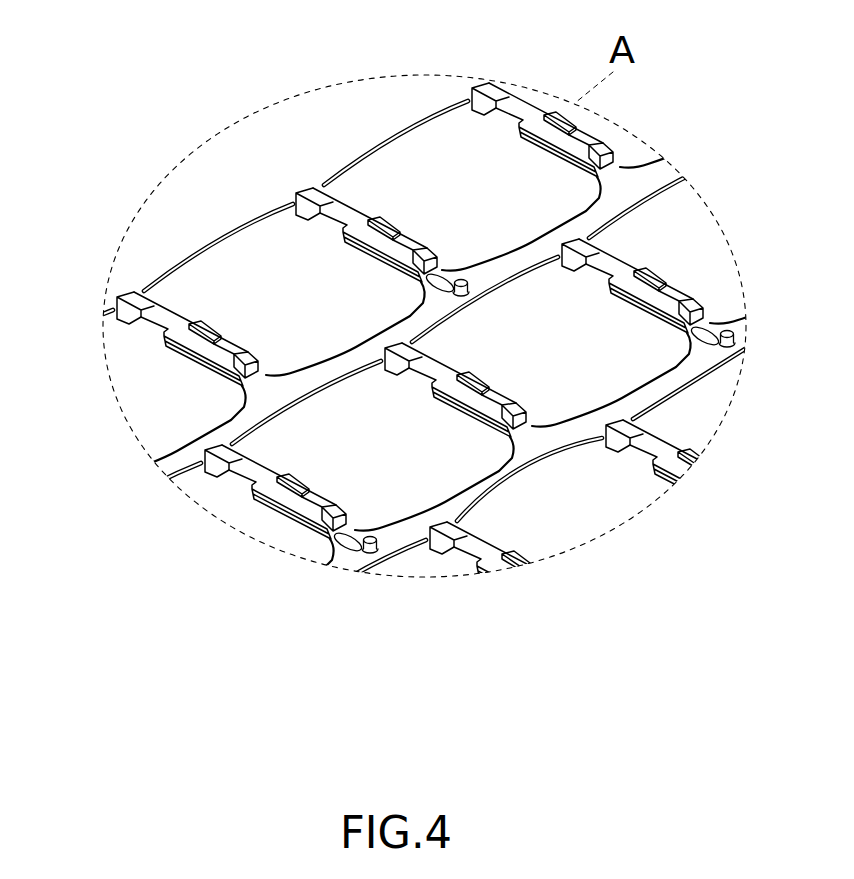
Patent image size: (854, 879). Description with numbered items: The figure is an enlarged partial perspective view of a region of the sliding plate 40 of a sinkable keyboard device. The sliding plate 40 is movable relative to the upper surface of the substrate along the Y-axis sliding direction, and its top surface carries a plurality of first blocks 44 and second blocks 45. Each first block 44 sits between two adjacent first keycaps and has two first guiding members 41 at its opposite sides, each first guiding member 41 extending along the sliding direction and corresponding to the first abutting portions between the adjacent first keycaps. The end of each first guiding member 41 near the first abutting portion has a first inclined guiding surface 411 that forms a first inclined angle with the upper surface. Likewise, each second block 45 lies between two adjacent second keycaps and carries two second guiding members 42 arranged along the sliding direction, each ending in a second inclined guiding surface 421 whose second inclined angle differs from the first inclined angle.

The sliding plate 40 is at (172, 207).
The first guiding member 41 is at (308, 233).
The first inclined guiding surface 411 is at (272, 204).
The second guiding member 42 is at (598, 242).
The second inclined guiding surface 421 is at (660, 292).
The first block 44 is at (316, 185).
The second block 45 is at (441, 343).